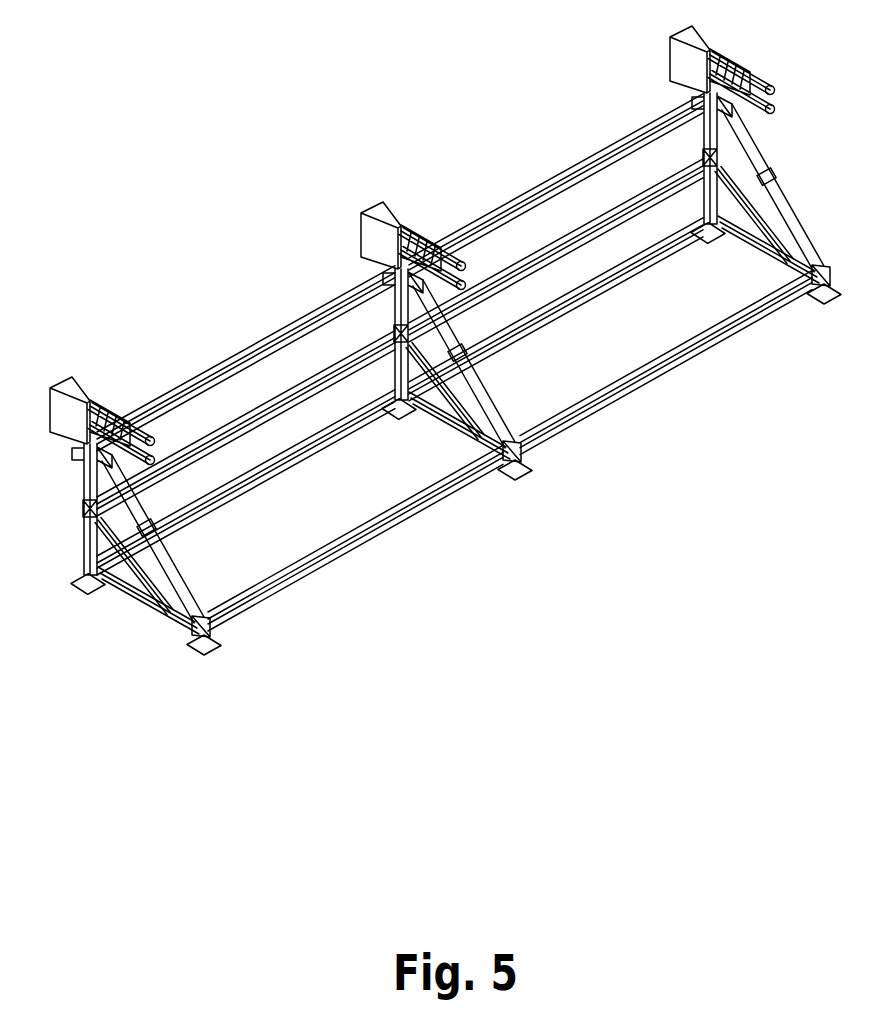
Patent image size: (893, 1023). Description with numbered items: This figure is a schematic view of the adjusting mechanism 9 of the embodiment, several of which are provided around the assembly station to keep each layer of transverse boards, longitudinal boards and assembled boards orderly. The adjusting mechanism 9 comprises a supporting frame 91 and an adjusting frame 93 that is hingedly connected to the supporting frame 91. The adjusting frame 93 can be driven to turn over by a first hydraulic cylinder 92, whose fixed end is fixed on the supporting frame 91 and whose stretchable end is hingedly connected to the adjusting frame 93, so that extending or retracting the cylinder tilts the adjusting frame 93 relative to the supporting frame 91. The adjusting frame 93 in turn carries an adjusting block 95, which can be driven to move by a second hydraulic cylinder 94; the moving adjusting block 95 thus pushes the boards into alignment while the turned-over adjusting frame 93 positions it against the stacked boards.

The adjusting mechanism 9 is at (325, 140).
The supporting frame 91 is at (482, 447).
The first hydraulic cylinder 92 is at (545, 452).
The adjusting frame 93 is at (363, 283).
The second hydraulic cylinder 94 is at (418, 227).
The adjusting block 95 is at (355, 230).